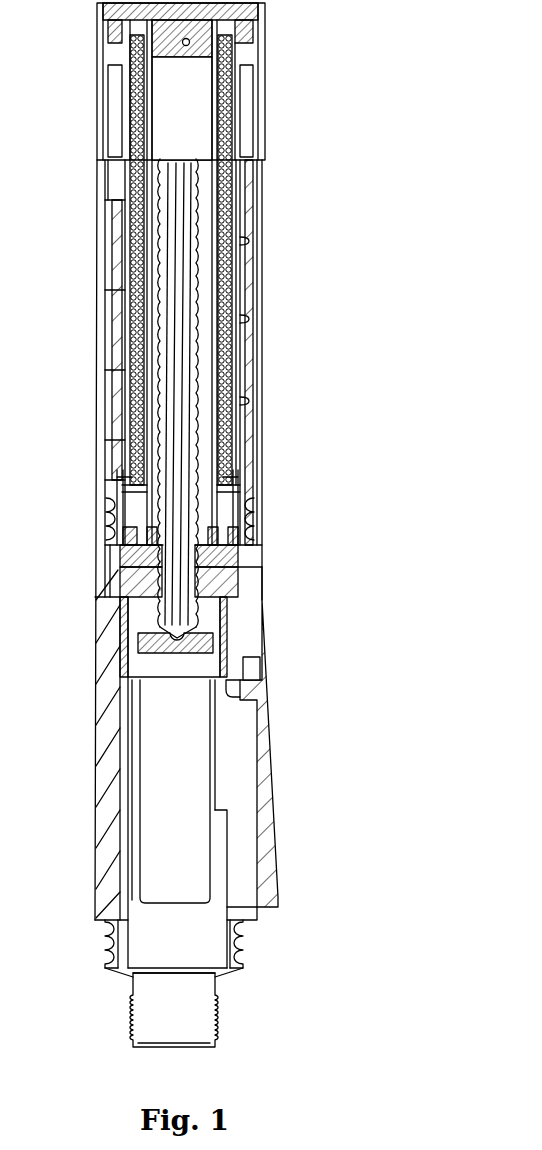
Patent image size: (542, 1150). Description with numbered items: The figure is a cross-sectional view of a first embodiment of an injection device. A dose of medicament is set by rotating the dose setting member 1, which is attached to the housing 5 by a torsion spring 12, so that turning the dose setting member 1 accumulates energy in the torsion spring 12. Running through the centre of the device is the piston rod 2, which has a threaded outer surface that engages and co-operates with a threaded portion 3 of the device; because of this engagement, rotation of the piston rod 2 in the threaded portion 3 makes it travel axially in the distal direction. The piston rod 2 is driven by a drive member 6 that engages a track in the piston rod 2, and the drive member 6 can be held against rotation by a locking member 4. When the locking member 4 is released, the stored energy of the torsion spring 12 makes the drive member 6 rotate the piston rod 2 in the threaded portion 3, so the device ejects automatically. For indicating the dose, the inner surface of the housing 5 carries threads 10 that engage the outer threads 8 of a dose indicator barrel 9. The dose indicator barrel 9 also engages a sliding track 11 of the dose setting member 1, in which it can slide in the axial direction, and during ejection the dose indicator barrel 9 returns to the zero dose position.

The dose setting member 1 is at (281, 99).
The piston rod 2 is at (173, 281).
The threaded portion 3 is at (238, 565).
The locking member 4 is at (257, 600).
The housing 5 is at (257, 358).
The drive member 6 is at (110, 557).
The outer threads 8 is at (243, 320).
The dose indicator barrel 9 is at (243, 442).
The threads 10 is at (243, 402).
The sliding track 11 is at (112, 258).
The torsion spring 12 is at (222, 210).